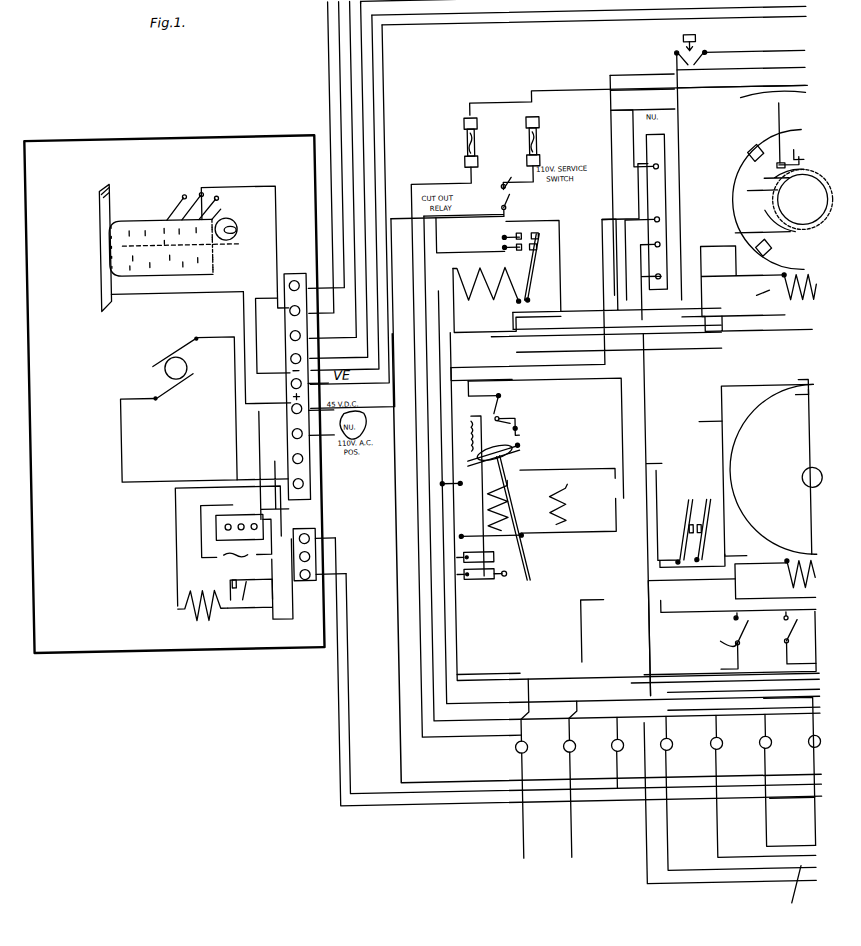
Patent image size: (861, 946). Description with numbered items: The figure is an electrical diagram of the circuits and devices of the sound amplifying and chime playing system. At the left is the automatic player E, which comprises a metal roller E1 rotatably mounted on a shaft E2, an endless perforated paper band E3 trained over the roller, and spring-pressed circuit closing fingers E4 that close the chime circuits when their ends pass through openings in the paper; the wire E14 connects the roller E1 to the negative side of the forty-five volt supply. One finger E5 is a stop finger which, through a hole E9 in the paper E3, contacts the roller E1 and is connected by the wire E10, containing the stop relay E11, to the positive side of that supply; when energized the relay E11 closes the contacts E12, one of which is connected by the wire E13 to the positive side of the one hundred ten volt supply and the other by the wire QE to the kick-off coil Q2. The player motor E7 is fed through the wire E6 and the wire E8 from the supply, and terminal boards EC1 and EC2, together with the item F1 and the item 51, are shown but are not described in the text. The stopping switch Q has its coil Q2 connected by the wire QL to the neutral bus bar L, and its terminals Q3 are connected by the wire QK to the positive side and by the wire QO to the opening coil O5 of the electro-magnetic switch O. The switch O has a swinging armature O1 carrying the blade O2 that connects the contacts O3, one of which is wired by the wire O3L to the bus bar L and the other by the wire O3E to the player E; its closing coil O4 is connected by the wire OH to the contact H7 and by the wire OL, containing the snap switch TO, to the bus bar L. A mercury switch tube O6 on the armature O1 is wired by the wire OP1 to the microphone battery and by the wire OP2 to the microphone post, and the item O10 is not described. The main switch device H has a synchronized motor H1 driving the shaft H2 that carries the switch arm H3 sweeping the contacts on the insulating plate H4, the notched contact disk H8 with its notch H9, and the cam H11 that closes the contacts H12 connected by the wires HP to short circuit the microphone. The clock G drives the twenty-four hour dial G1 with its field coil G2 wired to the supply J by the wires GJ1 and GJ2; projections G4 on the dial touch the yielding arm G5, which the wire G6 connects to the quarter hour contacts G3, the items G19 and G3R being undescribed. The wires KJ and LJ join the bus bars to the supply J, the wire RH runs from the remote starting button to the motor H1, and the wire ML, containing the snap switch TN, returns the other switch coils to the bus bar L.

The automatic player E is at (219, 133).
The metal roller E1 is at (233, 222).
The shaft E2 is at (238, 230).
The endless perforated paper band E3 is at (170, 300).
The circuit closing fingers E4 is at (186, 195).
The stop finger E5 is at (222, 208).
The circuit wire E6 is at (176, 487).
The player motor E7 is at (170, 358).
The circuit wire E8 is at (237, 404).
The hole E9 is at (204, 194).
The circuit wire E10 is at (255, 356).
The stop relay E11 is at (218, 615).
The contacts E12 is at (245, 605).
The circuit wire E13 is at (272, 603).
The wire E14 is at (243, 318).
The terminal strip EC1 is at (312, 364).
The terminal strip EC2 is at (268, 262).
The conductor F1 is at (514, 28).
The start switch 51 is at (683, 39).
The circuit wire KJ is at (742, 86).
The circuit wire LJ is at (640, 110).
The circuit wires HP is at (770, 127).
The main switch device H is at (750, 158).
The synchronized motor H1 is at (790, 255).
The rotatable shaft H2 is at (803, 200).
The switch arm H3 is at (775, 178).
The circular plate H4 is at (745, 218).
The contact H7 is at (760, 250).
The metal contact disk H8 is at (771, 221).
The notch H9 is at (750, 233).
The cam H11 is at (748, 190).
The circuit closing contacts H12 is at (780, 160).
The neutral bus bar L is at (648, 188).
The stopping switch Q is at (543, 268).
The magnet coil Q2 is at (507, 299).
The terminal contacts Q3 is at (520, 237).
The circuit wire QO is at (468, 252).
The circuit wire QK is at (561, 222).
The circuit wire QL is at (500, 338).
The circuit wire QE is at (331, 688).
The circuit wire O3L is at (478, 368).
The microphone switch O10 is at (500, 393).
The circuit wire OP1 is at (572, 378).
The wire OP2 is at (597, 438).
The mercury switch tube O6 is at (517, 430).
The swinging armature O1 is at (520, 450).
The circuit wire OH is at (575, 470).
The opening coil O5 is at (460, 502).
The closing coil O4 is at (550, 508).
The circuit wire OL is at (583, 540).
The electro-magnetic switch O is at (526, 535).
The switch blade O2 is at (517, 540).
The contacts O3 is at (489, 575).
The connecting wire GJ2 is at (598, 590).
The connecting wire GJ1 is at (680, 605).
The conductor G3R is at (713, 575).
The pair of contacts G3 is at (690, 533).
The rotating dial G1 is at (770, 533).
The field coil G2 is at (793, 560).
The projections G4 is at (800, 400).
The yielding contact arm G5 is at (800, 385).
The wire G6 is at (700, 420).
The hub G19 is at (804, 442).
The clock G is at (769, 461).
The circuit wire ML is at (649, 390).
The circuit wire O3E is at (340, 660).
The snap switch TO is at (720, 655).
The snap switch TN is at (780, 650).
The A.C. current supply J is at (562, 852).
The circuit wire RH is at (790, 771).